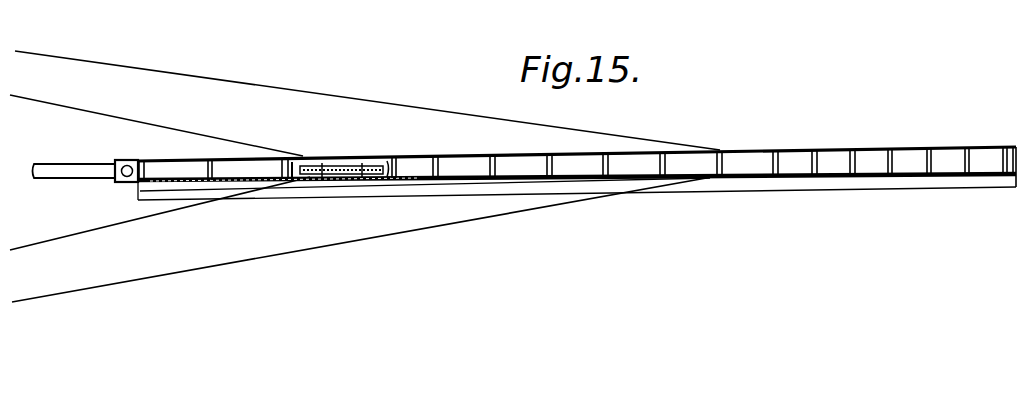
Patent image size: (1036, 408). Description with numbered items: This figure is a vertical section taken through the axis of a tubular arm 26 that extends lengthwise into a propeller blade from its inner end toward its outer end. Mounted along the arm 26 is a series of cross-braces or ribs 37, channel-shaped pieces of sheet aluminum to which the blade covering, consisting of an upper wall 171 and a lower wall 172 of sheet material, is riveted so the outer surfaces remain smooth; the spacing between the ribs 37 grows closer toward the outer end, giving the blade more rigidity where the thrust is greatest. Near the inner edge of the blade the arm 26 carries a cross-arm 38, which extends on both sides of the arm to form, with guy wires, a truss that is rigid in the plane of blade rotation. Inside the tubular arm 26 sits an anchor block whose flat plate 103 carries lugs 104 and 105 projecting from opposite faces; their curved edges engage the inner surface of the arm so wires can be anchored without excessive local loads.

The arm 26 is at (75, 170).
The cross-braces or ribs 37 is at (218, 158).
The cross-arm 38 is at (117, 162).
The flat plate 103 is at (362, 182).
The lug 104 is at (345, 158).
The lug 105 is at (333, 182).
The upper wall 171 is at (618, 153).
The lower wall 172 is at (607, 177).